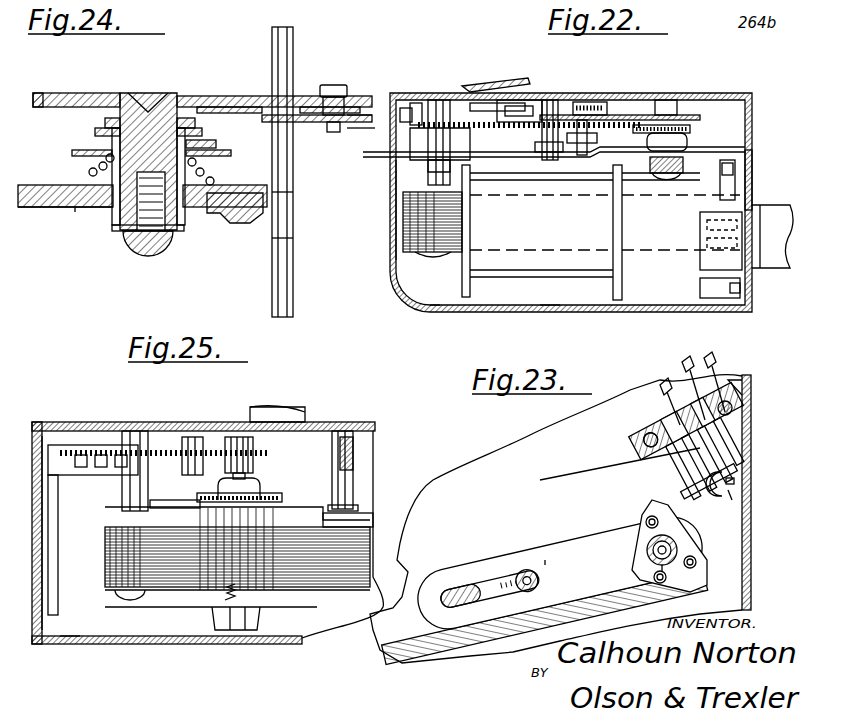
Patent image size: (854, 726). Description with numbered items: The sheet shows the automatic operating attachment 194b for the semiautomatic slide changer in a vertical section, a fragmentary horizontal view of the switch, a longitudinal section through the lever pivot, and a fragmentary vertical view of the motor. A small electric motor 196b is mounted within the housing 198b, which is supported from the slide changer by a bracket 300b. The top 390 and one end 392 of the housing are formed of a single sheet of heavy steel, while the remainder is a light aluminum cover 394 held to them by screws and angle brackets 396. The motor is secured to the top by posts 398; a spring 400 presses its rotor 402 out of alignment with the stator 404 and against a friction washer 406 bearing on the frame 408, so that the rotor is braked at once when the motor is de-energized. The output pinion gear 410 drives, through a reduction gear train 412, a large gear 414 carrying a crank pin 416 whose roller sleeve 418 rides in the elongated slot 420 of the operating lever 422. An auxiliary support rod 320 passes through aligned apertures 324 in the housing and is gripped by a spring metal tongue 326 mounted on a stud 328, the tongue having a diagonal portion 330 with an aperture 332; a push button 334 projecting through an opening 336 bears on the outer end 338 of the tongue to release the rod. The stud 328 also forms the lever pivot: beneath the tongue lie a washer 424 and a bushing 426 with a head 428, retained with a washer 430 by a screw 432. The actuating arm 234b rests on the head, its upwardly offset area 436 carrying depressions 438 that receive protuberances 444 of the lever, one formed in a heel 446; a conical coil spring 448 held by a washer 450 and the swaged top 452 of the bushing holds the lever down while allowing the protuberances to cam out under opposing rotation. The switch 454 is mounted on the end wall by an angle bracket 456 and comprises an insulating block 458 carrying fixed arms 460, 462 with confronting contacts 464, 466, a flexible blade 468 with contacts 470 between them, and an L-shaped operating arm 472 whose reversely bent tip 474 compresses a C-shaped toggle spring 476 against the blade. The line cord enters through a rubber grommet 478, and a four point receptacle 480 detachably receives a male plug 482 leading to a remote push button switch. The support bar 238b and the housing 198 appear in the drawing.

In FIG. 24, the housing 198 is at (62, 92).
In FIG. 22, the housing 198b is at (626, 313).
In FIG. 25, the housing 198b is at (64, 420).
In FIG. 22, the attachment or mechanism for automatically operating the slide changer 194b is at (440, 313).
In FIG. 25, the attachment or mechanism for automatically operating the slide changer 194b is at (160, 648).
In FIG. 22, the small electric motor 196b is at (428, 250).
In FIG. 25, the small electric motor 196b is at (117, 577).
In FIG. 24, the actuating arm 234b is at (43, 212).
In FIG. 22, the actuating arm 234b is at (395, 200).
In FIG. 23, the actuating arm 234b is at (392, 630).
In FIG. 22, the support bar 238b is at (392, 170).
In FIG. 22, the bracket 300b is at (500, 84).
In FIG. 25, the bracket 300b is at (255, 407).
In FIG. 24, the metal rod 320 is at (278, 217).
In FIG. 24, the apertures 324 is at (230, 100).
In FIG. 24, the spring metal tongue 326 is at (210, 128).
In FIG. 24, the stud 328 is at (157, 108).
In FIG. 24, the diagonal portion 330 is at (355, 135).
In FIG. 24, the aperture 332 is at (265, 95).
In FIG. 24, the push button 334 is at (330, 85).
In FIG. 24, the opening 336 is at (363, 100).
In FIG. 24, the outer end of the spring tongue 338 is at (352, 118).
In FIG. 24, the top of the housing 390 is at (80, 100).
In FIG. 22, the top of the housing 390 is at (612, 93).
In FIG. 25, the top of the housing 390 is at (95, 422).
In FIG. 22, the end wall of the housing 392 is at (754, 167).
In FIG. 25, the end wall of the housing 392 is at (45, 415).
In FIG. 22, the cover 394 is at (547, 313).
In FIG. 22, the angle brackets 396 is at (407, 108).
In FIG. 22, the posts 398 is at (445, 107).
In FIG. 25, the posts 398 is at (150, 440).
In FIG. 25, the spring 400 is at (227, 595).
In FIG. 25, the rotor or armature 402 is at (273, 500).
In FIG. 25, the stator 404 is at (293, 580).
In FIG. 25, the friction washer 406 is at (125, 492).
In FIG. 25, the frame of the motor 408 is at (302, 506).
In FIG. 25, the pinion gear 410 is at (235, 440).
In FIG. 22, the reduction gear train 412 is at (567, 100).
In FIG. 25, the reduction gear train 412 is at (170, 443).
In FIG. 22, the large gear 414 is at (483, 130).
In FIG. 23, the crank pin 416 is at (545, 560).
In FIG. 22, the roller sleeve 418 is at (548, 132).
In FIG. 23, the roller sleeve 418 is at (523, 583).
In FIG. 23, the longitudinally elongated slot 420 is at (467, 603).
In FIG. 24, the operating lever 422 is at (62, 188).
In FIG. 23, the operating lever 422 is at (467, 567).
In FIG. 24, the washer 424 is at (110, 128).
In FIG. 24, the bushing 426 is at (97, 217).
In FIG. 22, the bushing 426 is at (430, 100).
In FIG. 25, the bushing 426 is at (335, 428).
In FIG. 23, the bushing 426 is at (654, 568).
In FIG. 24, the circumferential flange or head 428 is at (108, 225).
In FIG. 24, the washer 430 is at (190, 228).
In FIG. 24, the screw 432 is at (180, 240).
In FIG. 24, the upwardly offset area 436 is at (75, 212).
In FIG. 24, the depressions 438 is at (293, 238).
In FIG. 24, the protuberances 444 is at (293, 192).
In FIG. 23, the outwardly projecting heel 446 is at (642, 513).
In FIG. 24, the conical coil spring 448 is at (95, 168).
In FIG. 24, the washer 450 is at (212, 180).
In FIG. 24, the swaged top of the bushing 452 is at (112, 140).
In FIG. 23, the switch 454 is at (732, 470).
In FIG. 22, the angle bracket 456 is at (737, 160).
In FIG. 23, the angle bracket 456 is at (758, 386).
In FIG. 23, the insulating base or mounting block 458 is at (648, 420).
In FIG. 23, the fixed switch arm 460 is at (640, 487).
In FIG. 23, the fixed switch arm 462 is at (722, 428).
In FIG. 23, the contact 464 is at (693, 473).
In FIG. 23, the contact 466 is at (720, 455).
In FIG. 23, the flexible switch arm or blade 468 is at (742, 408).
In FIG. 23, the contacts 470 is at (697, 510).
In FIG. 23, the flexible switch operating arm 472 is at (630, 468).
In FIG. 23, the reversely bent tip 474 is at (750, 550).
In FIG. 23, the C-shaped toggle spring 476 is at (728, 492).
In FIG. 23, the rubber grommet 478 is at (648, 547).
In FIG. 22, the four point female receptacle or connector 480 is at (707, 233).
In FIG. 22, the male plug or connector 482 is at (773, 252).